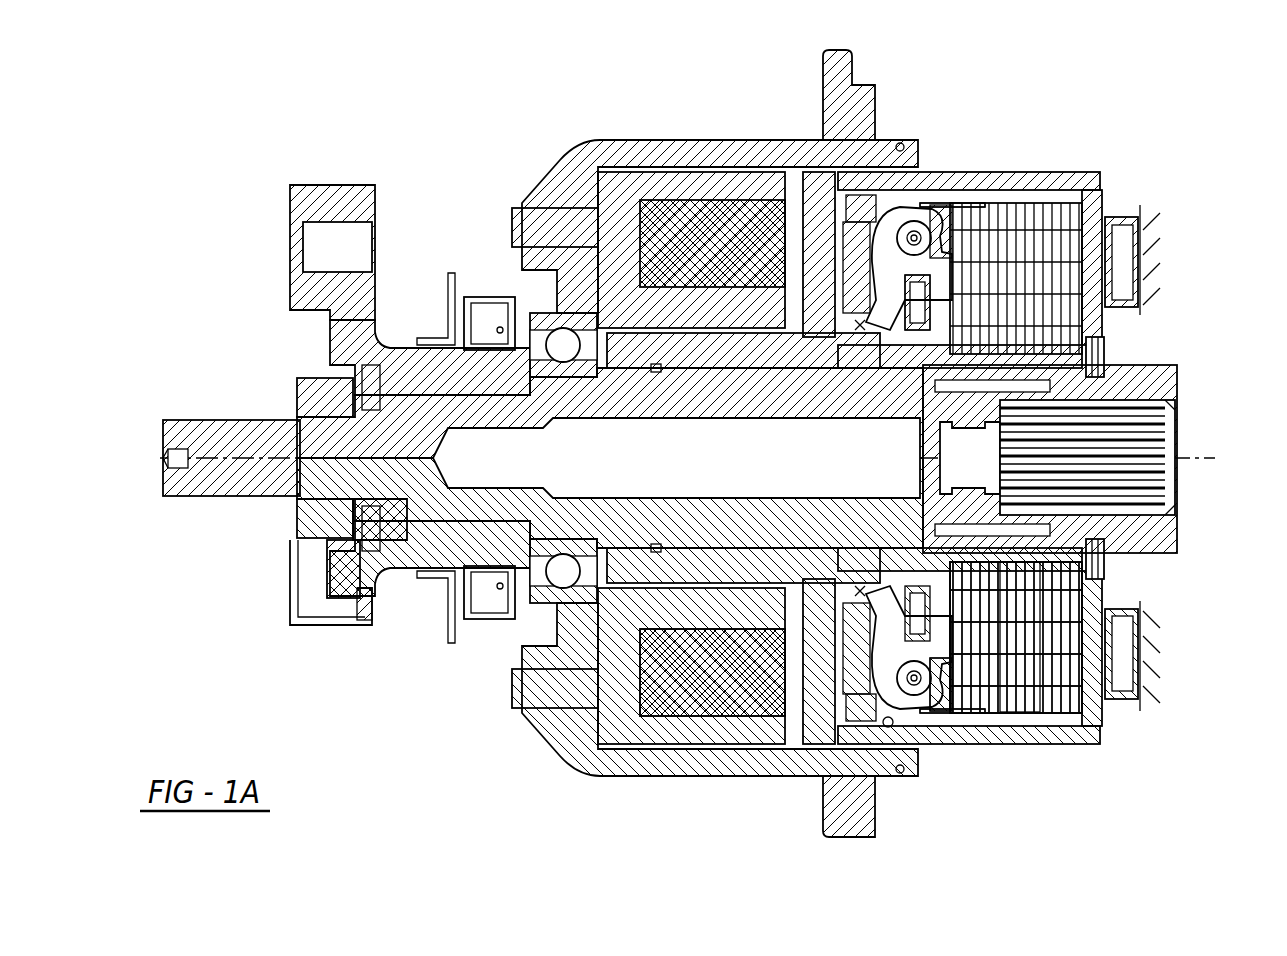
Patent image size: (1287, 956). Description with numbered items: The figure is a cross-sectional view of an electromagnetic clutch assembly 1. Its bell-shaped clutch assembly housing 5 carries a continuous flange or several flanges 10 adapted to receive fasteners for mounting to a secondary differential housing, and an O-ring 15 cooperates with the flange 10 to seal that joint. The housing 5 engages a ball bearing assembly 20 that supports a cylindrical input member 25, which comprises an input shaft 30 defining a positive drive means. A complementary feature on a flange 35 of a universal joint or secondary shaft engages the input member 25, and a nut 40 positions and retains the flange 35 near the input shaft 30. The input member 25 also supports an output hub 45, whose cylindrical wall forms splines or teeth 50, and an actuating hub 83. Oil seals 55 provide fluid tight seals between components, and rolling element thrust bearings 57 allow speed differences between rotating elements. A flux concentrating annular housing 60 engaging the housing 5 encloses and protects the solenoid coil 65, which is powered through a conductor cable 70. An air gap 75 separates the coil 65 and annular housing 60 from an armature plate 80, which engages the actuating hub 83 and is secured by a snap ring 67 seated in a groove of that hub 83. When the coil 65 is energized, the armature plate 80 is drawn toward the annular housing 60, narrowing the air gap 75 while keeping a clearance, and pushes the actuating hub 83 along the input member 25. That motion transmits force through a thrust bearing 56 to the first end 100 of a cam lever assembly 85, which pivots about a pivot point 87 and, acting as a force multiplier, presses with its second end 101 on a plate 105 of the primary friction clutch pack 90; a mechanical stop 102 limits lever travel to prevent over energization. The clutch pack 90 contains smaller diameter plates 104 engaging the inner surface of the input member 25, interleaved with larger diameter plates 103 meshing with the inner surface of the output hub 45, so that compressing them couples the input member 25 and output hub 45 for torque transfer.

The electromagnetic clutch assembly 1 is at (310, 118).
The clutch assembly housing 5 is at (595, 158).
The flange 10 is at (850, 92).
The O-ring 15 is at (900, 777).
The ball bearing assembly 20 is at (560, 342).
The input member 25 is at (443, 507).
The input shaft 30 is at (247, 487).
The flange 35 is at (325, 290).
The nut 40 is at (312, 397).
The output hub 45 is at (1089, 445).
The teeth 50 is at (1128, 432).
The oil seals 55 is at (482, 615).
The thrust bearing 56 is at (915, 312).
The rolling element thrust bearings 57 is at (1098, 560).
The flux concentrating annular housing 60 is at (668, 185).
The solenoid coil 65 is at (737, 240).
The snap ring 67 is at (775, 597).
The conductor cable 70 is at (543, 230).
The air gap 75 is at (797, 735).
The armature plate 80 is at (820, 210).
The actuating hub 83 is at (895, 338).
The cam lever assembly 85 is at (1107, 67).
The pivot point 87 is at (916, 222).
The primary friction clutch pack 90 is at (1196, 737).
The first end 100 is at (975, 204).
The second end 101 is at (914, 238).
The mechanical stop 102 is at (890, 725).
The larger diameter plate 103 is at (1020, 668).
The smaller diameter plates 104 is at (1052, 603).
The plate 105 is at (940, 682).